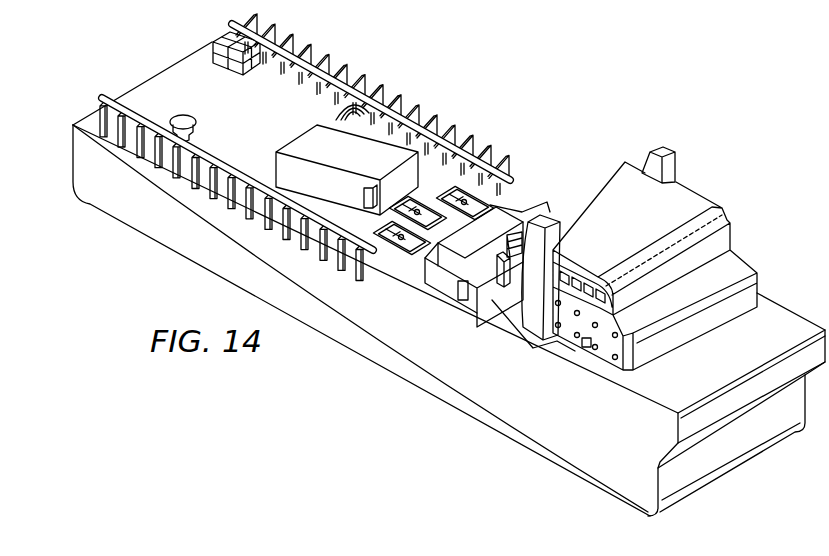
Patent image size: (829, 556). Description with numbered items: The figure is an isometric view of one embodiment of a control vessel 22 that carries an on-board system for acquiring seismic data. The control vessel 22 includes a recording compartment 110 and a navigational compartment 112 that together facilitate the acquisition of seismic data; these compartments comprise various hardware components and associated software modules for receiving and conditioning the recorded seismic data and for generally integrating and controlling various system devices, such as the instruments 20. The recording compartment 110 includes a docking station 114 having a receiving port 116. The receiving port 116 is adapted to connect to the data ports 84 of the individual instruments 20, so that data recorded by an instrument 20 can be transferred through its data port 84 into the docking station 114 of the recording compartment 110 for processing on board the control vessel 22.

The control vessel 22 is at (790, 313).
The recording compartment 110 is at (305, 135).
The navigational compartment 112 is at (368, 138).
The docking station 114 is at (375, 197).
The receiving port 116 is at (388, 226).
The data port 84 is at (397, 243).
The instrument 20 is at (488, 200).